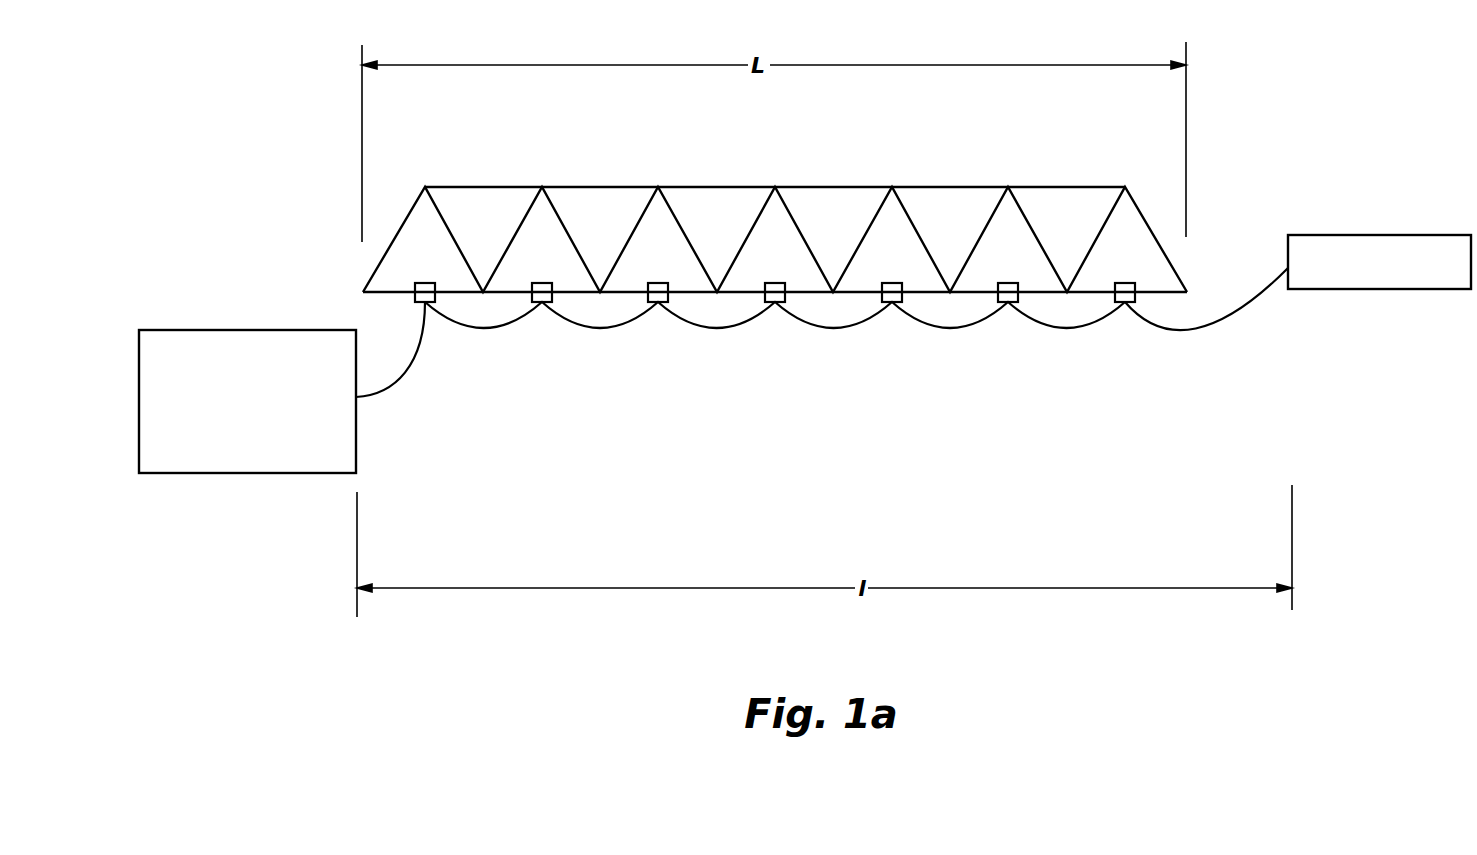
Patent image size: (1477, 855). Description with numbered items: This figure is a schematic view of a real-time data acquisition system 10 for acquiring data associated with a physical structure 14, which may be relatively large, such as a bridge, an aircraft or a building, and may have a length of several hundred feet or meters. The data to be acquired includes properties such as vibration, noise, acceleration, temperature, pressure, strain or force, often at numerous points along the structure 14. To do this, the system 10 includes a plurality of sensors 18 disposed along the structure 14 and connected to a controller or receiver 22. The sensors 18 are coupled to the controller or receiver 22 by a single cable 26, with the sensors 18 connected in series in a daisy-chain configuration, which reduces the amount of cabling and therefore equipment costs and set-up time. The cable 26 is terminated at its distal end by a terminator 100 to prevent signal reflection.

The data acquisition system 10 is at (575, 387).
The structure 14 is at (859, 158).
The sensors 18 is at (775, 310).
The controller or receiver 22 is at (261, 318).
The cable 26 is at (972, 338).
The terminator 100 is at (1391, 211).